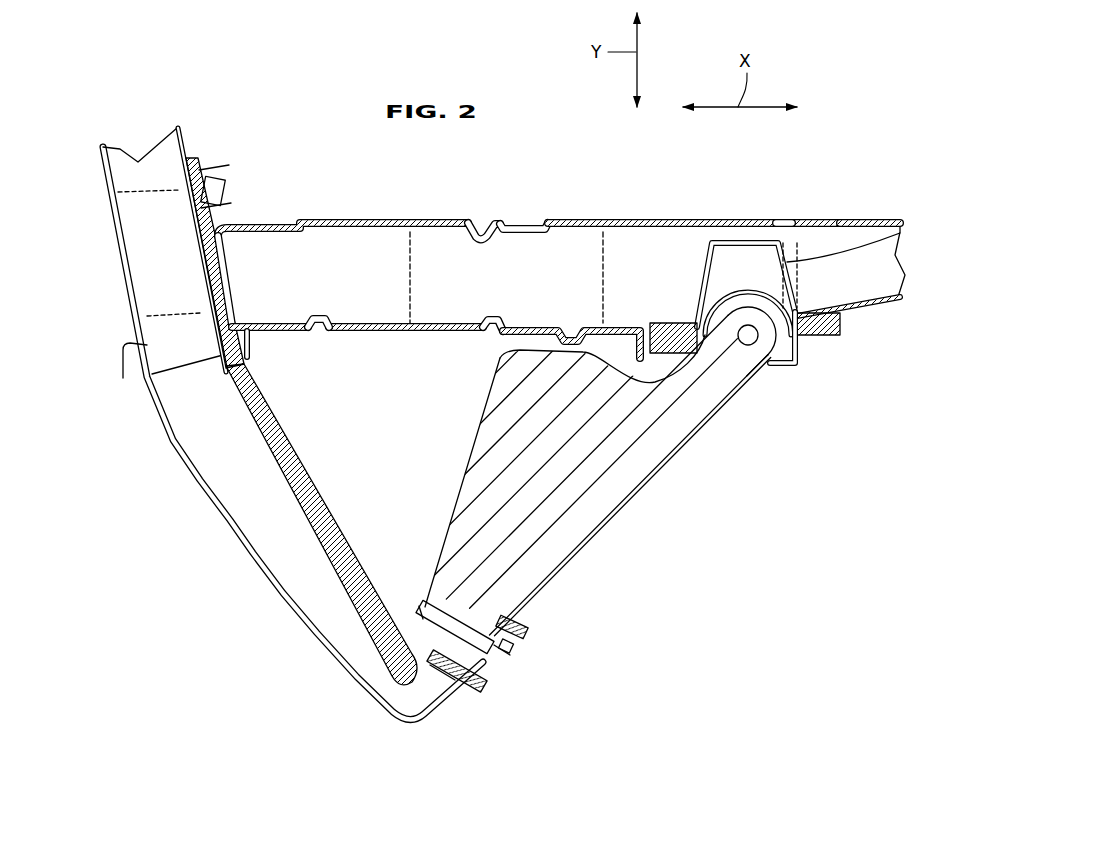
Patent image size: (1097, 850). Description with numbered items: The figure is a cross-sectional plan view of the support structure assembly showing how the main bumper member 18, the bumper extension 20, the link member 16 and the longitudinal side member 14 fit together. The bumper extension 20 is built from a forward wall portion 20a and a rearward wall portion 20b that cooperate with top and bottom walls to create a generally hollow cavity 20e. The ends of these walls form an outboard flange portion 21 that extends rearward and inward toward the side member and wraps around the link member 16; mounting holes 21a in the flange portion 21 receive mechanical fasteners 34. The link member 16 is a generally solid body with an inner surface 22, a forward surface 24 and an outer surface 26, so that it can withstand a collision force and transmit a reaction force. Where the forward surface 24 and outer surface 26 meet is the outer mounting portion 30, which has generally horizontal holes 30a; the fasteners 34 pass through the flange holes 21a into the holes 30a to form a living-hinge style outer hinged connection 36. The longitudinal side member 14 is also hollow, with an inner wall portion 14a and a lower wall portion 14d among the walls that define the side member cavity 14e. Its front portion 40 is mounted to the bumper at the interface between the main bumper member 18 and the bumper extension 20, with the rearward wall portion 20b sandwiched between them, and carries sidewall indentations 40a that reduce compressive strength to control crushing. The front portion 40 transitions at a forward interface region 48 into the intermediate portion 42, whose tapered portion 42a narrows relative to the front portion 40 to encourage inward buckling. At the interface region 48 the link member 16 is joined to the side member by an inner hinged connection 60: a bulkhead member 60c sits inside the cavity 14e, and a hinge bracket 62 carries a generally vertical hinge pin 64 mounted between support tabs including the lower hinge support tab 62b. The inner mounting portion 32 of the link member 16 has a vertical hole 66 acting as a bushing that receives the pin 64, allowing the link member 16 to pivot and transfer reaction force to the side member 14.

The longitudinal side member 14 is at (529, 261).
The inner wall portion 14a is at (701, 222).
The lower wall portion 14d is at (328, 277).
The side member cavity 14e is at (536, 295).
The link member 16 is at (616, 543).
The main bumper member 18 is at (146, 347).
The bumper extension 20 is at (292, 424).
The forward wall portion 20a is at (298, 624).
The rearward wall portion 20b is at (310, 483).
The cavity 20e is at (246, 493).
The flange portion 21 is at (648, 455).
The mounting holes 21a is at (506, 637).
The inner surface 22 is at (510, 348).
The forward surface 24 is at (466, 459).
The outer surface 26 is at (564, 568).
The outer mounting portion 30 is at (467, 673).
The holes 30a is at (407, 679).
The inner mounting portion 32 is at (745, 392).
The mechanical fasteners 34 is at (498, 667).
The outer hinged connection 36 is at (457, 695).
The front portion 40 is at (506, 222).
The sidewall indentations 40a is at (478, 237).
The intermediate portion 42 is at (865, 241).
The tapered portion 42a is at (873, 308).
The forward interface region 48 is at (784, 220).
The inner hinged connection 60 is at (781, 309).
The bulkhead member 60c is at (790, 262).
The hinge bracket 62 is at (840, 330).
The lower hinge support tab 62b is at (809, 345).
The hinge pin 64 is at (740, 346).
The hole 66 is at (758, 367).